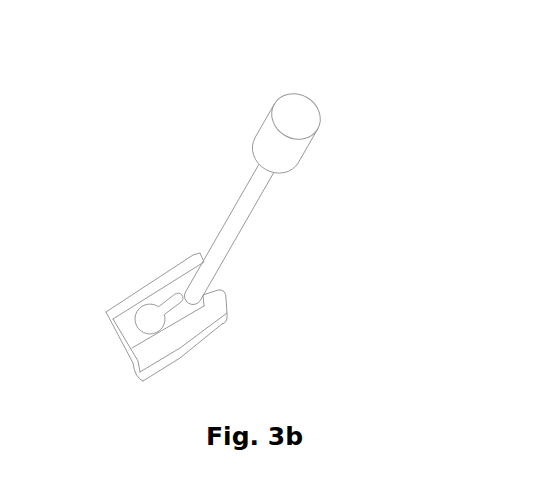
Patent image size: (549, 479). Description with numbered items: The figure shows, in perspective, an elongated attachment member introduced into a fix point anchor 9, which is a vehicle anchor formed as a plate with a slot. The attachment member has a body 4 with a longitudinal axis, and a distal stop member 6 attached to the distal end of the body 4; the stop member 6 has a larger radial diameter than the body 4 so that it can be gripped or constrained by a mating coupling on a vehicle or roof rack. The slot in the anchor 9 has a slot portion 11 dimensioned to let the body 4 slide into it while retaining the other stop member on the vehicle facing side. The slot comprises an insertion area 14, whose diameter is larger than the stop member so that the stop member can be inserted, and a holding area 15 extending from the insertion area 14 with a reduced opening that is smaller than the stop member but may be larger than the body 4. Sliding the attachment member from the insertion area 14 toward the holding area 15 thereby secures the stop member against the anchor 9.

The body 4 is at (232, 220).
The distal stop member 6 is at (280, 116).
The fix point anchor 9 is at (113, 314).
The slot portion 11 is at (168, 297).
The insertion area 14 is at (129, 352).
The holding area 15 is at (178, 300).